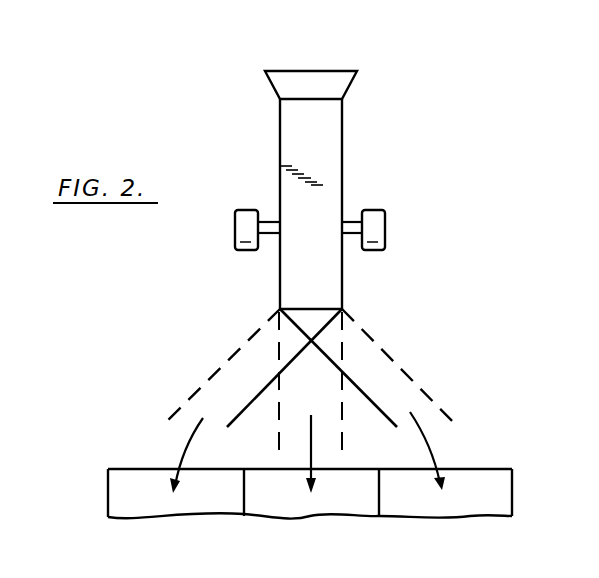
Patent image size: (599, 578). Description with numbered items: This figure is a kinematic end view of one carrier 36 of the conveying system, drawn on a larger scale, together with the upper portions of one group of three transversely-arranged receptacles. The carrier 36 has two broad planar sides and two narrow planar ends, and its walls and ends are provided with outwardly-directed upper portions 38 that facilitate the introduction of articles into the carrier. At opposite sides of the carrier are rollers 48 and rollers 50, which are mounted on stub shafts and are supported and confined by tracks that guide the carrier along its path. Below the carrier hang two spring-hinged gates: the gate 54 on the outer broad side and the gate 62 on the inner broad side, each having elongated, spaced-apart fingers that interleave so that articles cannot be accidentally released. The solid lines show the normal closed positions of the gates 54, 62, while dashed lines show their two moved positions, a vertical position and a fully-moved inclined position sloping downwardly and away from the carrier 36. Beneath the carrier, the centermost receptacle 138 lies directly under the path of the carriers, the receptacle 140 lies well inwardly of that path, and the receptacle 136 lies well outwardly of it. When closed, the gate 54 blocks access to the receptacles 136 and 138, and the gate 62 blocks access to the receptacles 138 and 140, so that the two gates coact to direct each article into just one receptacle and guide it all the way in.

The carrier 36 is at (347, 148).
The outwardly-directed upper portions 38 is at (305, 76).
The rollers 48 is at (237, 232).
The rollers 50 is at (377, 232).
The gate 54 is at (297, 328).
The gate 62 is at (315, 336).
The receptacle 136 is at (166, 510).
The receptacle 138 is at (311, 510).
The receptacle 140 is at (437, 510).